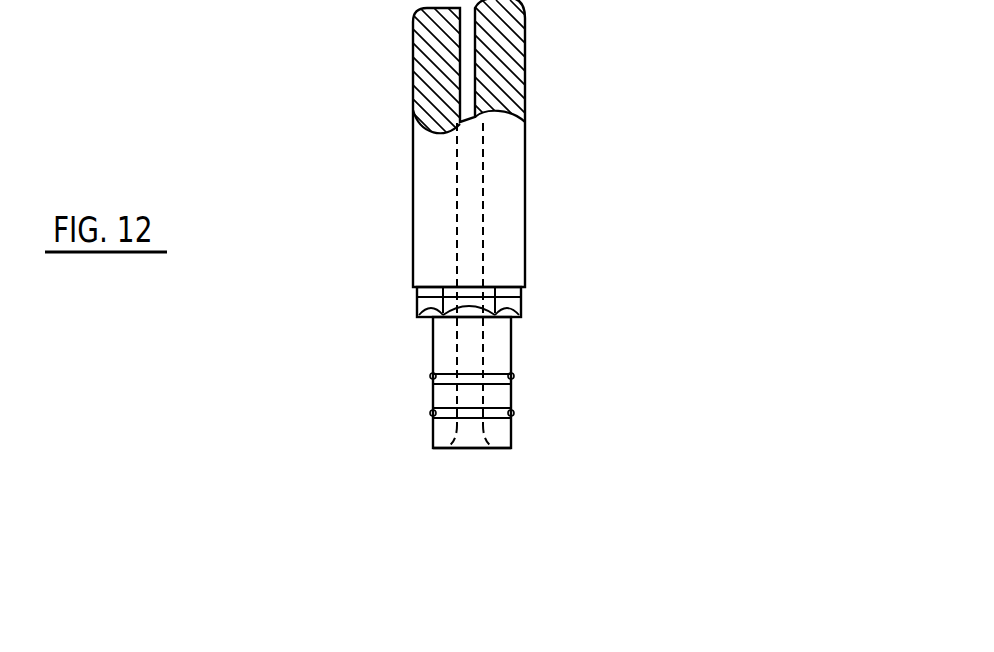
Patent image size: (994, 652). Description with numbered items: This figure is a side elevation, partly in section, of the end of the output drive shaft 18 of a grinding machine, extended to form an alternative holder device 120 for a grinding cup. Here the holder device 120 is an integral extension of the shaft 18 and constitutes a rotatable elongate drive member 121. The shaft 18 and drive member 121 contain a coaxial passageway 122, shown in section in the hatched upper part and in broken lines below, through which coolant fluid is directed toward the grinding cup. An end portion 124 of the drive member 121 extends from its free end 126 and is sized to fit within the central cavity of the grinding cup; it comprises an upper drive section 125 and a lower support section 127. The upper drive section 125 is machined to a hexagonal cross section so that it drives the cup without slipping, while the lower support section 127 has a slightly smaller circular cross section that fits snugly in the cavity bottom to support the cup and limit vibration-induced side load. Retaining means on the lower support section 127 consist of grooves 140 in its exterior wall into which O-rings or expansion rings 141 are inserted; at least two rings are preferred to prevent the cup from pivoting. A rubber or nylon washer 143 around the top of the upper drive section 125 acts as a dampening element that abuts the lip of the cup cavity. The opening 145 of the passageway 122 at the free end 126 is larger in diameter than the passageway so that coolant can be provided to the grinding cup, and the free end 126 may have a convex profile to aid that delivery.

The output drive shaft 18 is at (437, 57).
The holder device 120 is at (558, 223).
The rotatable elongate drive member 121 is at (413, 193).
The coaxial passageway 122 is at (468, 57).
The end portion 124 is at (560, 447).
The upper drive section 125 is at (511, 303).
The free end 126 is at (502, 449).
The lower support section 127 is at (432, 348).
The grooves 140 is at (511, 378).
The O-rings or expansion rings 141 is at (433, 413).
The washer 143 is at (417, 291).
The opening 145 is at (470, 436).